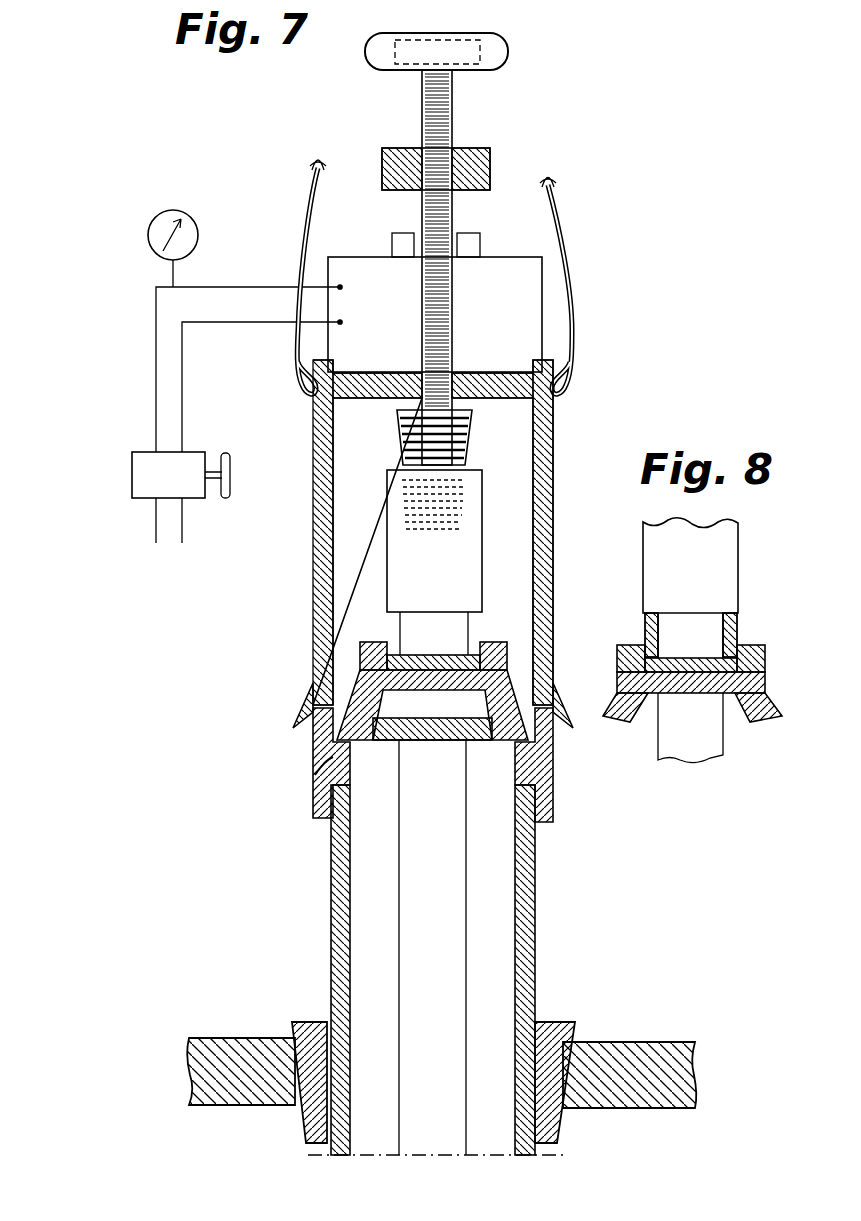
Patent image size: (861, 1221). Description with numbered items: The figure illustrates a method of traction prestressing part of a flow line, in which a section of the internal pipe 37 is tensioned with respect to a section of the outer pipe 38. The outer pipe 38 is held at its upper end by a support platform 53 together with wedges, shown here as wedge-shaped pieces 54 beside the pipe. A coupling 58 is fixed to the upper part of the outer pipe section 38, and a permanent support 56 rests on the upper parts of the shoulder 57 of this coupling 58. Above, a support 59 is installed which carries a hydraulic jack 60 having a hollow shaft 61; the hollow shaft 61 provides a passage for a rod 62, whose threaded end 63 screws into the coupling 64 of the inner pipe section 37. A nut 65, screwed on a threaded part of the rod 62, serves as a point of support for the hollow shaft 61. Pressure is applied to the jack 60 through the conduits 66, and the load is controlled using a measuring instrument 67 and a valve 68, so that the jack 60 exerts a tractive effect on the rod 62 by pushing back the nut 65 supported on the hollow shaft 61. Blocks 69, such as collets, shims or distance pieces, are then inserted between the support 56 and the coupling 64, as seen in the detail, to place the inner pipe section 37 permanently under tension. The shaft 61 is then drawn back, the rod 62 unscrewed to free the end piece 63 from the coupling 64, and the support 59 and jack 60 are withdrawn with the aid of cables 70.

In FIG. 7, the internal pipe 37 is at (452, 891).
In FIG. 7, the outer pipe 38 is at (525, 959).
In FIG. 7, the support platform 53 is at (625, 1067).
In FIG. 7, the pipe collar 54 is at (556, 1031).
In FIG. 7, the permanent support 56 is at (502, 681).
In FIG. 8, the permanent support 56 is at (760, 696).
In FIG. 7, the shoulder 57 is at (312, 769).
In FIG. 7, the coupling 58 is at (540, 761).
In FIG. 7, the support 59 is at (540, 484).
In FIG. 7, the jack 60 is at (528, 321).
In FIG. 7, the hollow shaft 61 is at (472, 241).
In FIG. 7, the rod 62 is at (450, 336).
In FIG. 7, the threaded end 63 is at (470, 440).
In FIG. 7, the coupling 64 is at (448, 563).
In FIG. 8, the coupling 64 is at (716, 556).
In FIG. 7, the nut 65 is at (468, 162).
In FIG. 7, the conduits 66 is at (215, 288).
In FIG. 7, the measuring instrument 67 is at (185, 231).
In FIG. 7, the valve 68 is at (190, 466).
In FIG. 8, the blocks 69 is at (737, 631).
In FIG. 7, the cables 70 is at (571, 296).